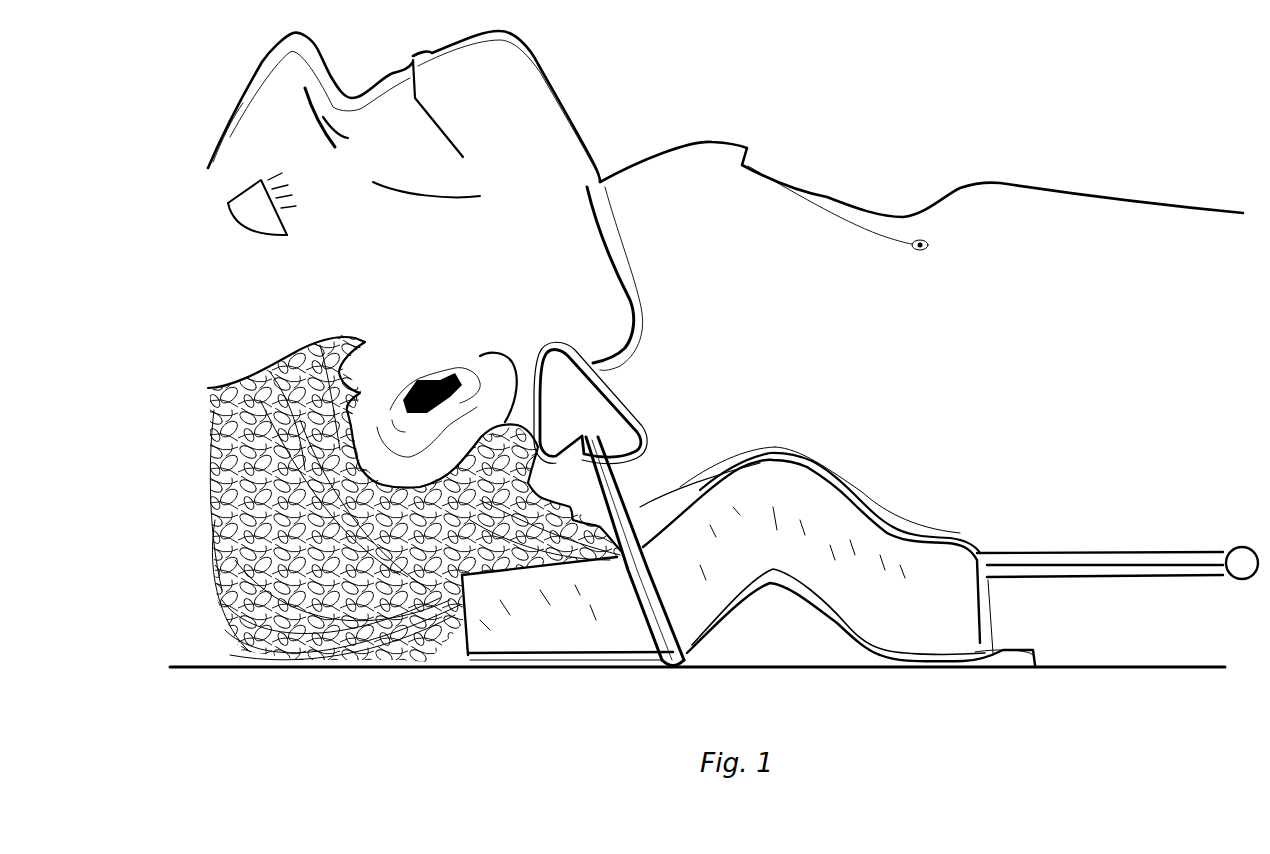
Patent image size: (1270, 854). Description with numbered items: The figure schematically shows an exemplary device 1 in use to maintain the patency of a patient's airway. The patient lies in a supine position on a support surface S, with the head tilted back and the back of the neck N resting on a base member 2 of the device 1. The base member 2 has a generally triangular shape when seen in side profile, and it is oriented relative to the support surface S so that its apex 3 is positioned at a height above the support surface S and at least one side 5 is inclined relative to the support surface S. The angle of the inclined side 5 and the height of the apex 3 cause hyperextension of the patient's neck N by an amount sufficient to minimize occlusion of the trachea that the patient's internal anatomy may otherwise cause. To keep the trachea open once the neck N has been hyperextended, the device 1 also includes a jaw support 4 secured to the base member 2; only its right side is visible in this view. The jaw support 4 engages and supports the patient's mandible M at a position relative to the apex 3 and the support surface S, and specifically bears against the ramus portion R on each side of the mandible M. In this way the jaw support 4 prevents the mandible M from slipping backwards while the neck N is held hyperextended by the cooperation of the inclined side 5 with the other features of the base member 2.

The device 1 is at (1098, 622).
The base member 2 is at (550, 655).
The apex 3 is at (767, 460).
The jaw support 4 is at (610, 393).
The side 5 is at (863, 510).
The mandible M is at (537, 63).
The neck N is at (827, 195).
The ramus portion R is at (522, 350).
The support surface S is at (1155, 668).